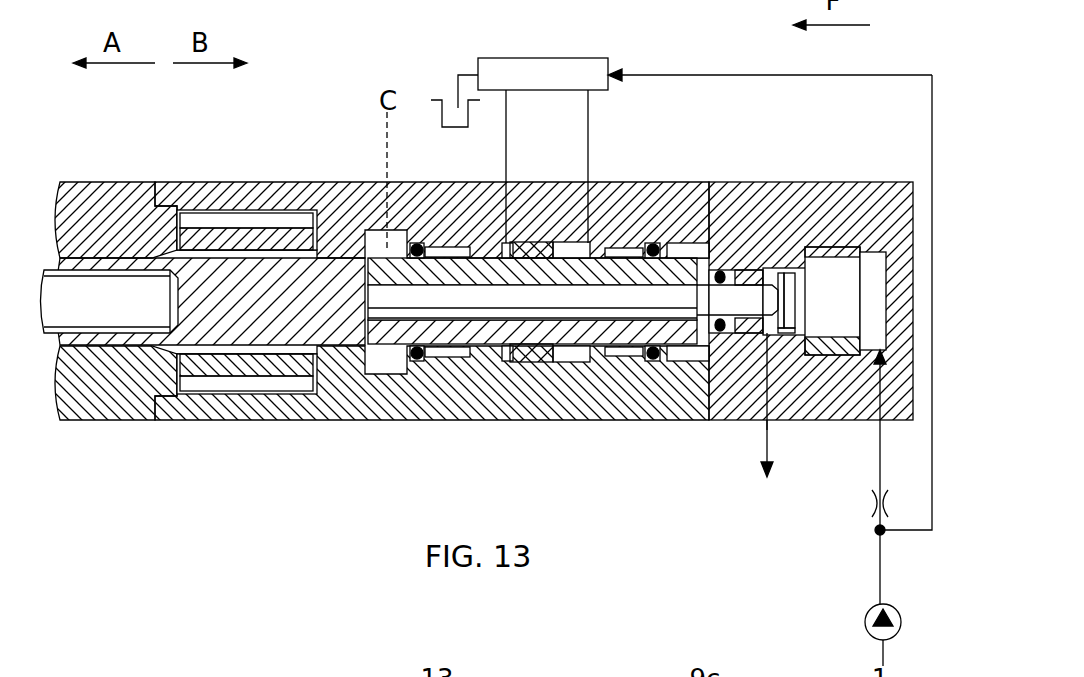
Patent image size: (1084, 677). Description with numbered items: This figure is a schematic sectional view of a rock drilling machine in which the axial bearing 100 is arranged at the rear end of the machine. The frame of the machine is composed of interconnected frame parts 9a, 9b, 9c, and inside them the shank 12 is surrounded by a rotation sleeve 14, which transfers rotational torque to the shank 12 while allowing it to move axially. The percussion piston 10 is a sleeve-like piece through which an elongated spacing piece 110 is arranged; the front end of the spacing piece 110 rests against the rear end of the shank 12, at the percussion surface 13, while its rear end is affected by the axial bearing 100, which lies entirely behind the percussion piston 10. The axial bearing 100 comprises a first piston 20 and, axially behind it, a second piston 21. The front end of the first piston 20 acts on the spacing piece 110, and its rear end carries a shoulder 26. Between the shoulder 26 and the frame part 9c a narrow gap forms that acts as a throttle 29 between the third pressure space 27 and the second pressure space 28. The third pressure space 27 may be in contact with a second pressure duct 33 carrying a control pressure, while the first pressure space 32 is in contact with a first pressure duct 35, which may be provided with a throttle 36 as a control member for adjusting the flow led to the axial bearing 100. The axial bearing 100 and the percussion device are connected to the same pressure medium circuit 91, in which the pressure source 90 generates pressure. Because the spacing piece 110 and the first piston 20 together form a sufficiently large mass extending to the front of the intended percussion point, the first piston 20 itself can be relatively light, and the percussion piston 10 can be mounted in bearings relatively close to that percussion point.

The frame part 9a is at (94, 195).
The frame part 9b is at (620, 192).
The frame part of the axial bearing 9c is at (828, 185).
The percussion piston 10 is at (480, 340).
The shank 12 is at (292, 316).
The percussion surface 13 is at (415, 243).
The rotation sleeve 14 is at (235, 392).
The first piston 20 is at (737, 300).
The second piston 21 is at (849, 316).
The shoulder 26 is at (787, 333).
The third pressure space 27 is at (773, 280).
The second pressure space 28 is at (802, 273).
The throttle 29 is at (793, 333).
The first pressure space 32 is at (872, 254).
The second pressure duct 33 is at (767, 430).
The first pressure duct 35 is at (880, 437).
The throttle 36 is at (872, 503).
The pressure source 90 is at (866, 632).
The pressure medium circuit 91 is at (878, 566).
The axial bearing 100 is at (690, 450).
The spacing piece 110 is at (532, 302).